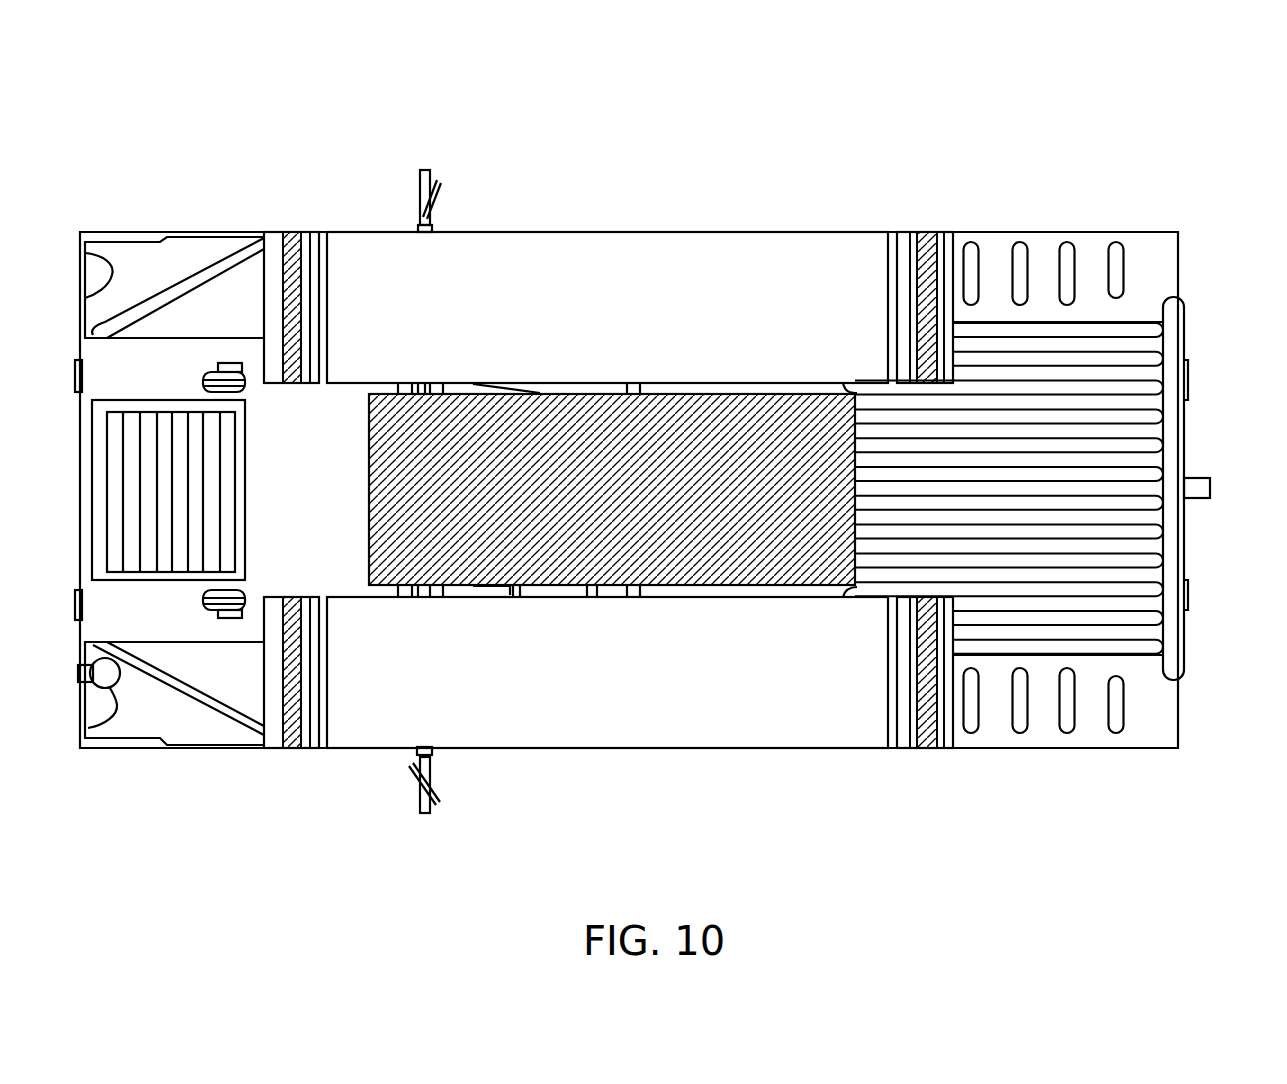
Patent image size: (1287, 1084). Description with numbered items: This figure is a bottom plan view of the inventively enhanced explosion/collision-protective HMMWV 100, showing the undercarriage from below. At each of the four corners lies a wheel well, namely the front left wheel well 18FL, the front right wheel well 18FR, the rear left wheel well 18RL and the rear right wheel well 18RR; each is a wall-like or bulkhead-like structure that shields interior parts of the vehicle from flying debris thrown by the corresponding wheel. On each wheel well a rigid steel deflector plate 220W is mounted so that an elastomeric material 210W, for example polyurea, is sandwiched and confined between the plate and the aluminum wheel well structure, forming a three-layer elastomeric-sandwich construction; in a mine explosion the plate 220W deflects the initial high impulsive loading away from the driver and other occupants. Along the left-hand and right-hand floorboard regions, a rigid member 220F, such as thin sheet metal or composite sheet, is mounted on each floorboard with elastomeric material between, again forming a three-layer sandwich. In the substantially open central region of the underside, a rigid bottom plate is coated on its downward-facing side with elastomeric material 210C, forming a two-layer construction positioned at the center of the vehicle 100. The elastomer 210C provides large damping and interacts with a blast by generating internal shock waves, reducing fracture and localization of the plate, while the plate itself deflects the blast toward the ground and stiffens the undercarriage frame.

The explosion/collision-protective HMMWV 100 is at (1117, 147).
The front left wheel well 18FL is at (312, 262).
The front right wheel well 18FR is at (317, 747).
The rear left wheel well 18RL is at (907, 263).
The rear right wheel well 18RR is at (907, 735).
The elastomeric material 210W is at (292, 265).
The rigid member (steel deflector plate) 220W is at (275, 262).
The rigid member (floorboard sheet) 220F is at (568, 262).
The elastomeric material (ERC coating) 210C is at (590, 410).